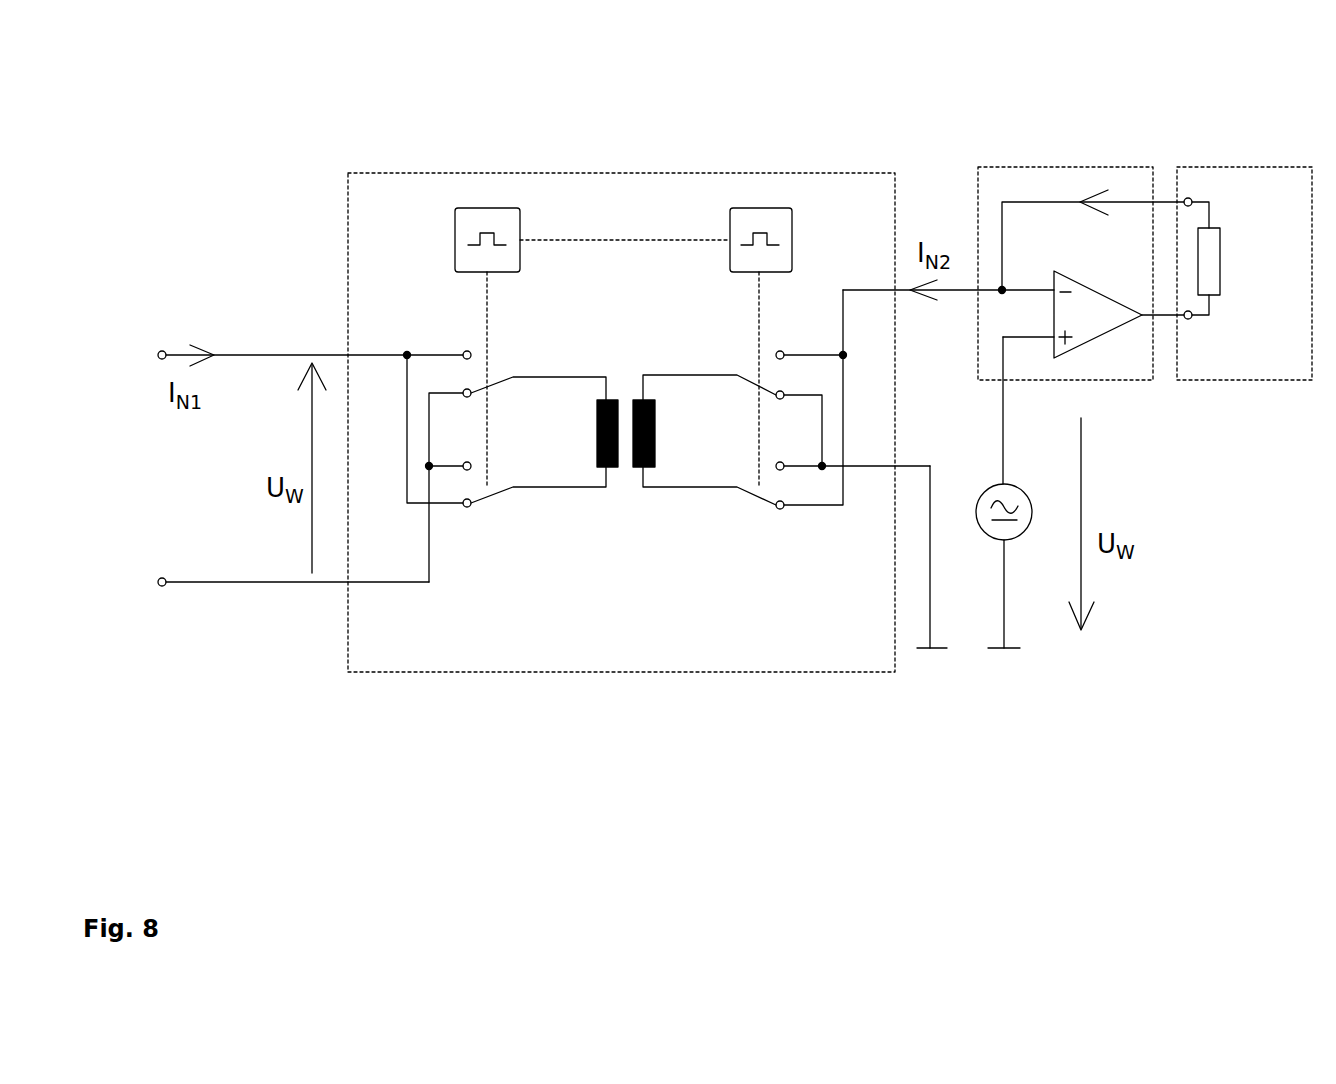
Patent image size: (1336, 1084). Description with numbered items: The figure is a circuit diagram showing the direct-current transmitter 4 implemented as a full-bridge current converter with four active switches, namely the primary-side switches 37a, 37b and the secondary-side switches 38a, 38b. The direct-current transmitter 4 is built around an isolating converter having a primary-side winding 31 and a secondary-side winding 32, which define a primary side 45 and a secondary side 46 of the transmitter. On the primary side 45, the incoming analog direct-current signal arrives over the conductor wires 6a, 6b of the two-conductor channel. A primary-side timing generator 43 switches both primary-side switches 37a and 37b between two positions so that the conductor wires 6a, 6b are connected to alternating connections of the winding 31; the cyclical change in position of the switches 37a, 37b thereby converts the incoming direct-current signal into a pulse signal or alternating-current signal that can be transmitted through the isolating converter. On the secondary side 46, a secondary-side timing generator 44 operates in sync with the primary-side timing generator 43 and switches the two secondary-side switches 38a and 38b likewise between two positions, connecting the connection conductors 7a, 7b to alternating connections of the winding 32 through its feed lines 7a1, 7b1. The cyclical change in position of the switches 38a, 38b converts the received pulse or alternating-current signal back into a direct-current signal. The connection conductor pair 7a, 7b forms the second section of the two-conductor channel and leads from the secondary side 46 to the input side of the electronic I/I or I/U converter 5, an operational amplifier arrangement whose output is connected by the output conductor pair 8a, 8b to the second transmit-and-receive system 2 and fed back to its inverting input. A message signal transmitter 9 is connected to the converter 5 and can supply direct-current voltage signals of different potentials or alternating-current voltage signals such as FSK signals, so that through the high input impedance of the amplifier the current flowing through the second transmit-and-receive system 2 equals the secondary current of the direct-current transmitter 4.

The second transmit-and-receive system 2 is at (1228, 167).
The direct-current transmitter 4 is at (560, 170).
The electronic I/I or I/U converter 5 is at (1037, 167).
The conductor wire 6a is at (337, 355).
The conductor wire 6b is at (302, 583).
The connection conductor 7a is at (870, 290).
The connection conductor 7b is at (933, 573).
The feed line of the secondary winding 7a1 is at (688, 375).
The feed line of the secondary winding 7b1 is at (703, 487).
The output conductor 8a is at (1162, 200).
The output conductor 8b is at (1162, 319).
The message signal transmitter 9 is at (997, 542).
The primary-side winding 31 is at (597, 443).
The secondary-side winding 32 is at (655, 437).
The primary-side switch 37a is at (445, 357).
The primary-side switch 37b is at (448, 492).
The secondary-side switch 38a is at (802, 370).
The secondary-side switch 38b is at (798, 490).
The primary-side timing generator 43 is at (485, 208).
The secondary-side timing generator 44 is at (758, 208).
The primary side 45 is at (380, 457).
The secondary side 46 is at (873, 387).